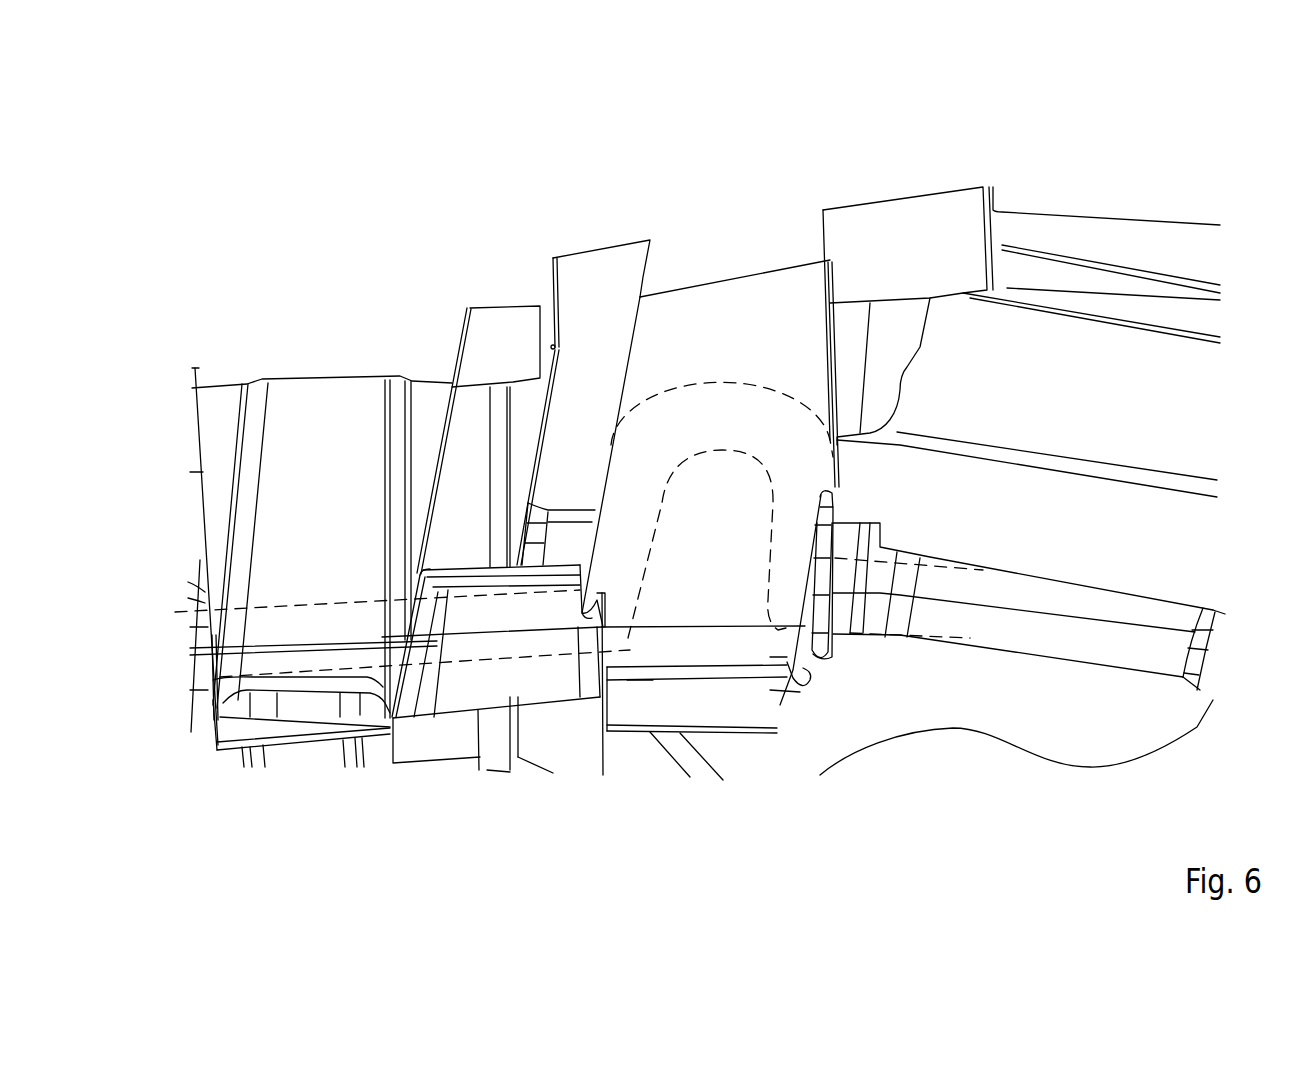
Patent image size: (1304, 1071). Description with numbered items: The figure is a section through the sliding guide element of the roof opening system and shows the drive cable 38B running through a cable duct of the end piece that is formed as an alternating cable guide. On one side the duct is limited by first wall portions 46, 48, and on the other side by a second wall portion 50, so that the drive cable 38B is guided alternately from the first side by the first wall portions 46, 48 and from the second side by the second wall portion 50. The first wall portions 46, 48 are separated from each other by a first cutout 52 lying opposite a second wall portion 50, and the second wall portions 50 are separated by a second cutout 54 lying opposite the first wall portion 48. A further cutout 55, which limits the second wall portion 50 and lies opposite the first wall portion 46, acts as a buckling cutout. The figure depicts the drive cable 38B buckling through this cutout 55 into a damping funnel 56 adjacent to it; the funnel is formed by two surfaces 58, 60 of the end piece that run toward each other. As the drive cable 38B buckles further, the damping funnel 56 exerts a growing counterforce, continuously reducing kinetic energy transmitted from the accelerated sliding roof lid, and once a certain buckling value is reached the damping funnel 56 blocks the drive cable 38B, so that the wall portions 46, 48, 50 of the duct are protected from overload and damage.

The drive cable 38B is at (722, 417).
The first wall portion 46 is at (703, 683).
The first wall portion 48 is at (302, 693).
The second wall portion 50 is at (472, 580).
The first cutout 52 is at (467, 697).
The second cutout 54 is at (412, 572).
The cutout 55 is at (593, 547).
The damping funnel 56 is at (833, 457).
The surface 58 is at (823, 240).
The surface 60 is at (647, 268).